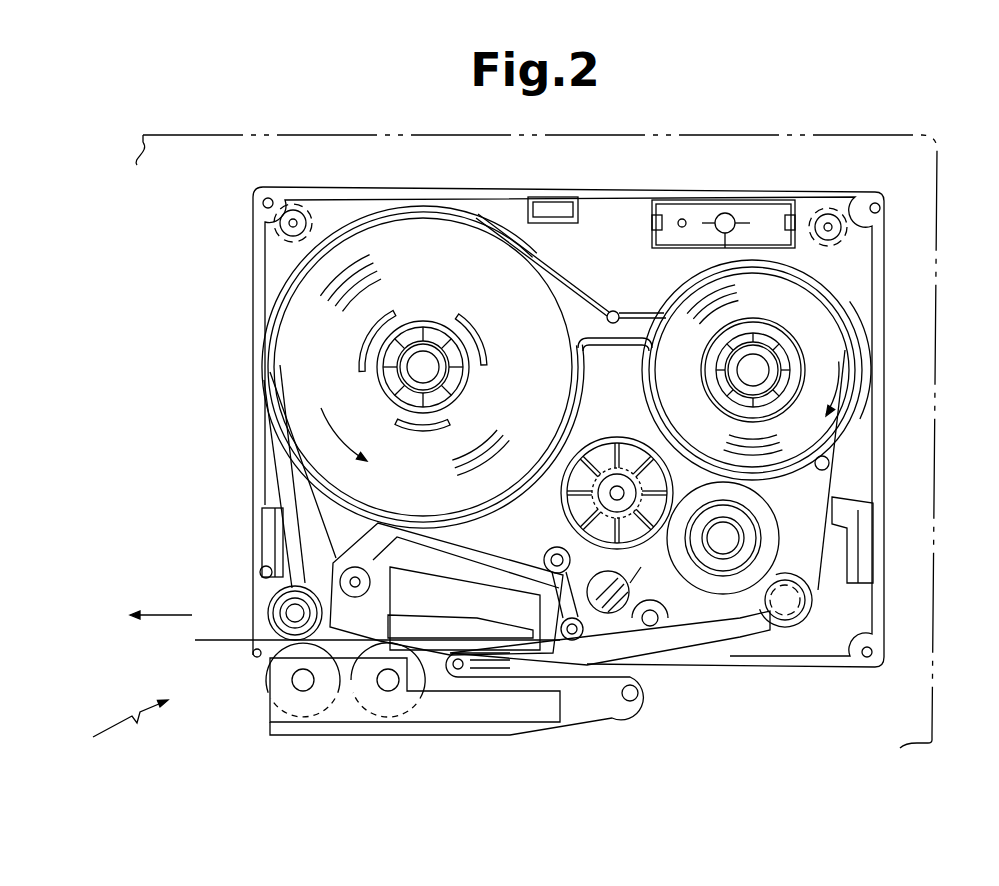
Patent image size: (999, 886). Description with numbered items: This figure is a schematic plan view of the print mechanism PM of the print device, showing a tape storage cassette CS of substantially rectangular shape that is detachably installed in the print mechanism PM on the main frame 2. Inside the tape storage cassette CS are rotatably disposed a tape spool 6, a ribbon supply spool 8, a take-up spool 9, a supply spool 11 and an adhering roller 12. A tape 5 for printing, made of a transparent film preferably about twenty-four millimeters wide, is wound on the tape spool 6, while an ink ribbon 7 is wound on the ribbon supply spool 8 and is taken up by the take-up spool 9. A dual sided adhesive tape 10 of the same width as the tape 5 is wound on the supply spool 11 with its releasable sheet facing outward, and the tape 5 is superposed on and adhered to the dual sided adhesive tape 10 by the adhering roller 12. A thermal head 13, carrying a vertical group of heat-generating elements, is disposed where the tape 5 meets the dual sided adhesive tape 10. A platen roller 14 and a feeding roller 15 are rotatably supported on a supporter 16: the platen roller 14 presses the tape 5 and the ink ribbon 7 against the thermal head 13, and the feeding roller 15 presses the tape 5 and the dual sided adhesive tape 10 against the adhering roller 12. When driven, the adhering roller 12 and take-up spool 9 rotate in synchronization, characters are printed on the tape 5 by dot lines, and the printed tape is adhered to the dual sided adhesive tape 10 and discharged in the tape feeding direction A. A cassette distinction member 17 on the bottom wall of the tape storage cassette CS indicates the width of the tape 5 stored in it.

The main frame 2 is at (940, 237).
The tape storage cassette CS is at (888, 422).
The tape for printing 5 is at (765, 290).
The tape spool 6 is at (797, 337).
The ink ribbon 7 is at (765, 529).
The ribbon supply spool 8 is at (818, 588).
The take-up spool 9 is at (634, 432).
The dual sided adhesive tape 10 is at (400, 236).
The supply spool 11 is at (440, 323).
The adhering roller 12 is at (277, 603).
The thermal head 13 is at (432, 655).
The platen roller 14 is at (367, 712).
The feeding roller 15 is at (290, 712).
The supporter 16 is at (528, 736).
The cassette distinction member 17 is at (695, 208).
The tape feeding direction A is at (160, 615).
The print mechanism PM is at (103, 730).